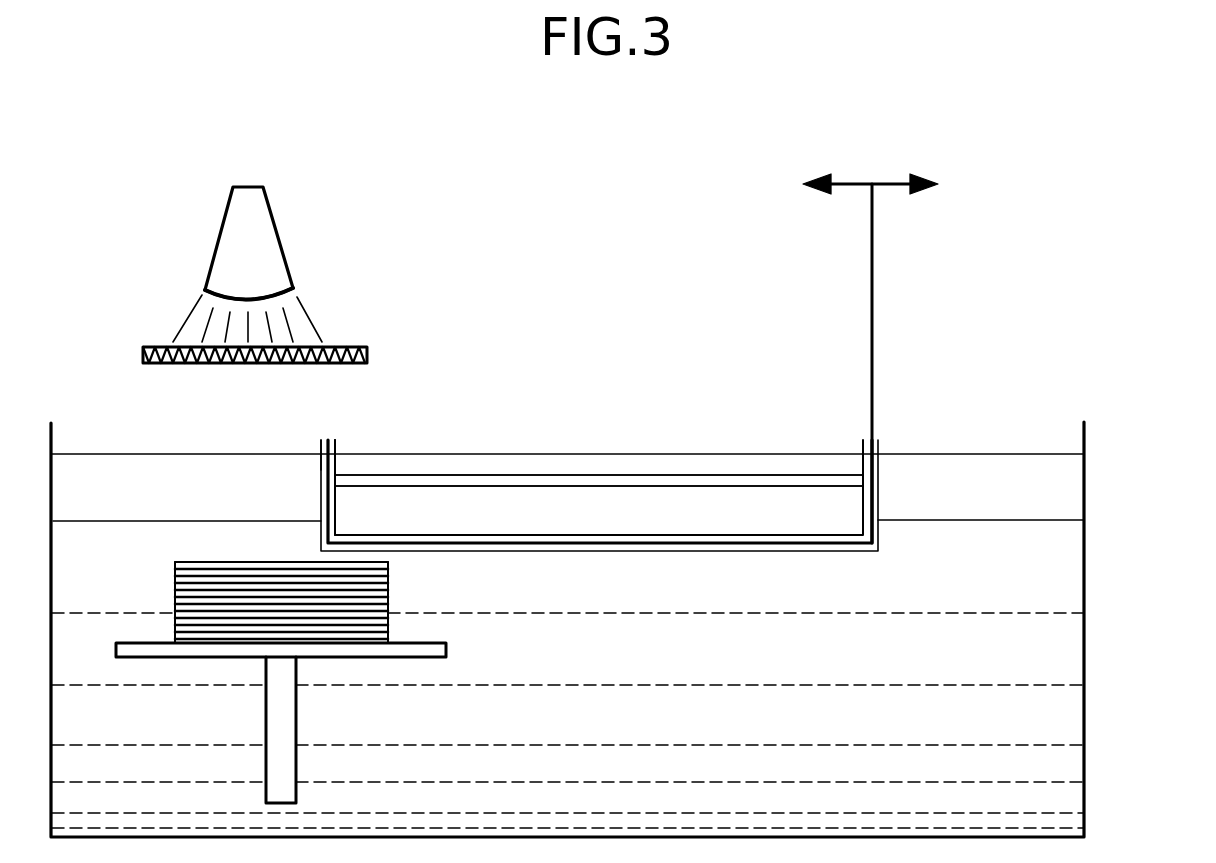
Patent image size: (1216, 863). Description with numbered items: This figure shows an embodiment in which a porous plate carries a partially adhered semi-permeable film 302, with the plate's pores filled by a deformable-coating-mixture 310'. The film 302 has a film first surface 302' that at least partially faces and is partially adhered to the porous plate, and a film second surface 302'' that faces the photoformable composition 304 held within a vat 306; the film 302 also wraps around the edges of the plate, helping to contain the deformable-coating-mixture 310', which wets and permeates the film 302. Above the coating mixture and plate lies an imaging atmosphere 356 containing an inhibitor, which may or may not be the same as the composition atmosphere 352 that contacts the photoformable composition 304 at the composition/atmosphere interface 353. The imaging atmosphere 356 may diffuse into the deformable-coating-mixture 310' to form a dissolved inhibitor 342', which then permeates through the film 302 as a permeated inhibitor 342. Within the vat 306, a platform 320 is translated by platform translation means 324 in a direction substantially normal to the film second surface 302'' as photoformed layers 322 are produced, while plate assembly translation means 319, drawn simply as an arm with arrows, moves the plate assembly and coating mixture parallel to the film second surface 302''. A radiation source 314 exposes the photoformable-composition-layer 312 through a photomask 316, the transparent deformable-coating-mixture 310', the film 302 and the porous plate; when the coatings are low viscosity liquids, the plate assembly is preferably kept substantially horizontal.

The film 302 is at (599, 461).
The film first surface 302' is at (392, 420).
The film second surface 302'' is at (245, 468).
The photoformable composition 304 is at (1046, 724).
The vat 306 is at (1087, 591).
The deformable-coating-mixture 310' is at (663, 431).
The photoformable-composition-layer 312 is at (275, 557).
The radiation source 314 is at (247, 187).
The photomask 316 is at (152, 347).
The plate assembly translation means 319 is at (922, 180).
The platform 320 is at (447, 647).
The photoformed layers 322 is at (390, 590).
The platform translation means 324 is at (297, 700).
The permeated inhibitor 342 is at (599, 453).
The dissolved inhibitor 342' is at (599, 420).
The composition atmosphere 352 is at (1045, 495).
The composition/atmosphere interface 353 is at (985, 518).
The imaging atmosphere 356 is at (647, 463).